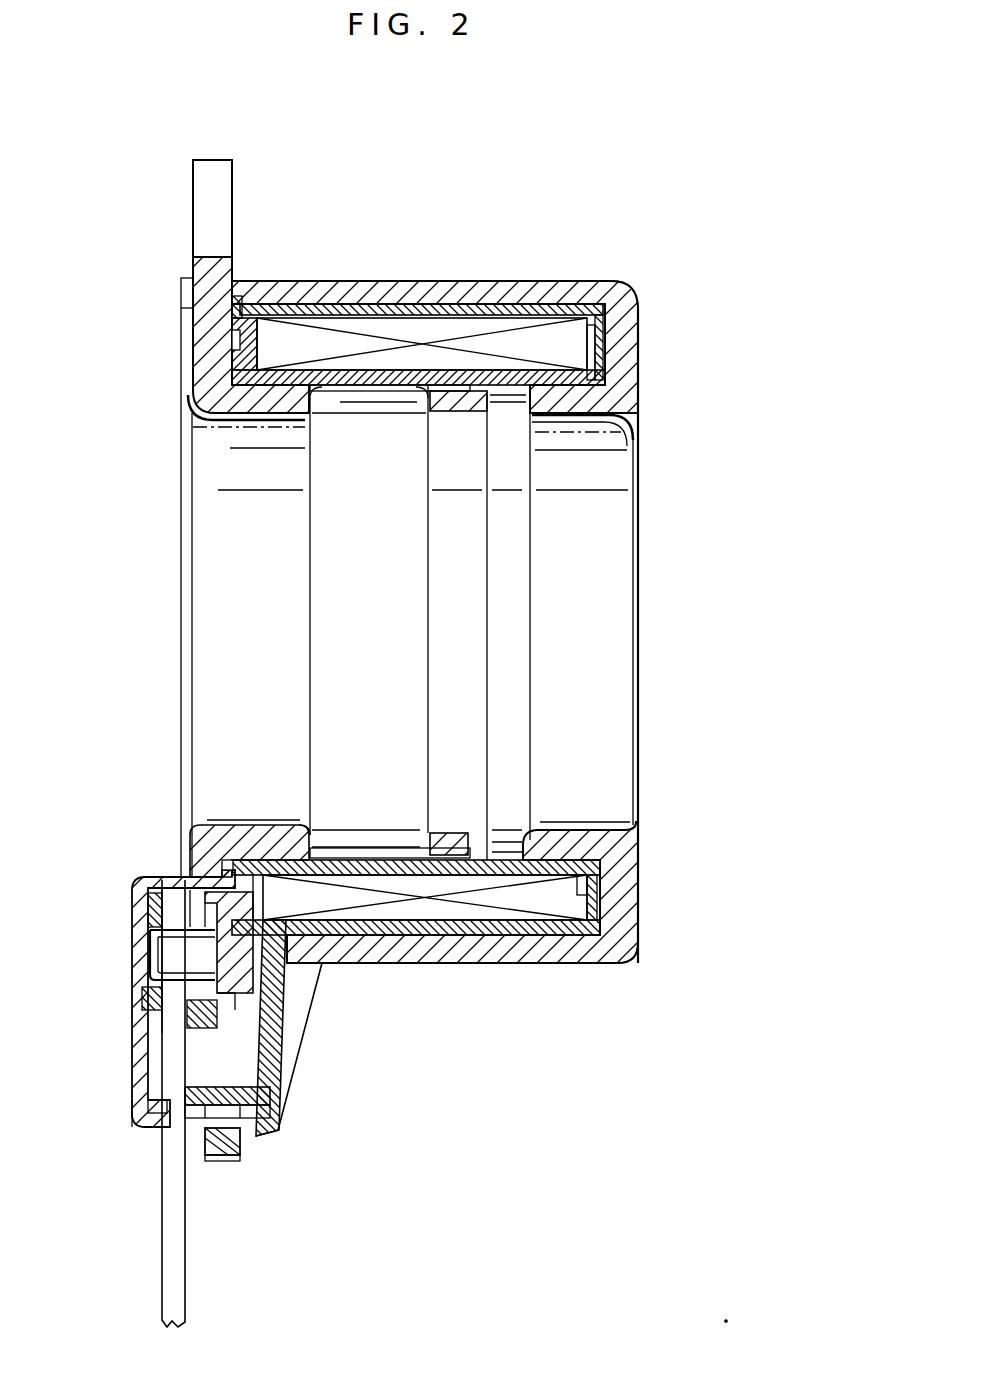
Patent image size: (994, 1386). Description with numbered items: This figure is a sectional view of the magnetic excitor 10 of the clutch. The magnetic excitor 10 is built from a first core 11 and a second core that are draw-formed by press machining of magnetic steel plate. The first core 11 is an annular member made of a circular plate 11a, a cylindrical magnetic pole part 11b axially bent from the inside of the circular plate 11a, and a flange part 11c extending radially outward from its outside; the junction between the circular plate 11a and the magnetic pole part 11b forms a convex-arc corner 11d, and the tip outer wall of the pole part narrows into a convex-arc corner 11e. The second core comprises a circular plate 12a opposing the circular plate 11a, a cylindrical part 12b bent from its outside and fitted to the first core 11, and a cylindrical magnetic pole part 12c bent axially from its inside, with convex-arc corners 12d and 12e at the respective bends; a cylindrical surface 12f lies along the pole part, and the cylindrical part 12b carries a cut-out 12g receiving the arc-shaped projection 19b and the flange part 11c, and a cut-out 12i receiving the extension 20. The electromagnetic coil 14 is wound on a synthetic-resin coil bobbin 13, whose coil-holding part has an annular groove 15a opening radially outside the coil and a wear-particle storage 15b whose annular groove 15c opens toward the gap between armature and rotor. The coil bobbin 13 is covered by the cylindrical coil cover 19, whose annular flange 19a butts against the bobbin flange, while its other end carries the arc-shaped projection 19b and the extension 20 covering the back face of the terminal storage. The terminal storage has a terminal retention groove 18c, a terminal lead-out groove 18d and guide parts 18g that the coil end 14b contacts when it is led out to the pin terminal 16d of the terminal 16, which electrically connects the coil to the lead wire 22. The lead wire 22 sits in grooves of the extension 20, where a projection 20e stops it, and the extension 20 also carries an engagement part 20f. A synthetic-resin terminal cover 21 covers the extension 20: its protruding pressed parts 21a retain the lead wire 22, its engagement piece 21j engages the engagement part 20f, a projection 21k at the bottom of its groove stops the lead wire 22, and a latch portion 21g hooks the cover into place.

The magnetic excitor 10 is at (568, 268).
The first core 11 is at (207, 160).
The circular plate 11a is at (205, 355).
The cylindrical magnetic pole part 11b is at (250, 402).
The flange part 11c is at (193, 195).
The convex-arc corner 11d is at (190, 410).
The convex-arc corner 11e is at (332, 392).
The circular plate 12a is at (620, 375).
The cylindrical part 12b is at (468, 281).
The cylindrical magnetic pole part 12c is at (570, 410).
The corner 12d is at (622, 290).
The corner 12e is at (638, 412).
The housing bore edge 12f is at (500, 392).
The cut-out 12g is at (181, 292).
The cut-out 12i is at (275, 985).
The coil bobbin 13 is at (248, 318).
The electromagnetic coil 14 is at (332, 304).
The coil end 14b is at (258, 1112).
The annular groove 15a is at (545, 320).
The wear-particle storage 15b is at (445, 528).
The annular groove 15c is at (412, 393).
The terminal 16 is at (150, 958).
The pin terminal 16d is at (244, 1142).
The terminal retention groove 18c is at (186, 868).
The terminal lead-out groove 18d is at (218, 1050).
The guide part 18g is at (240, 1010).
The coil cover 19 is at (405, 304).
The annular flange 19a is at (600, 340).
The arc-shaped projection 19b is at (238, 296).
The extension 20 is at (272, 1096).
The projection for stopping lead wire 20e is at (150, 1104).
The engagement part 20f is at (218, 1160).
The terminal cover 21 is at (133, 1050).
The protruding pressed part 21a is at (148, 908).
The bracket latch 21g is at (232, 862).
The engagement piece 21j is at (250, 1132).
The projection for stopping lead wire 21k is at (140, 1128).
The lead wire 22 is at (164, 1262).